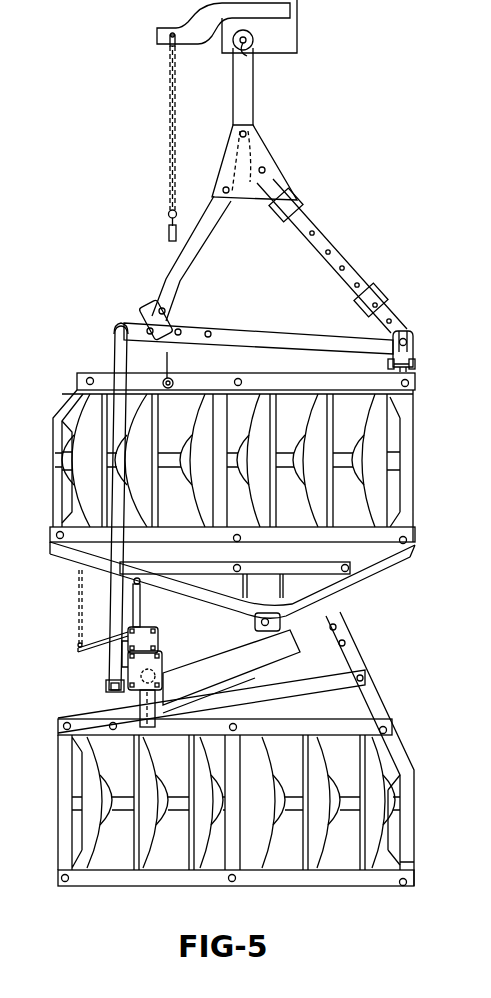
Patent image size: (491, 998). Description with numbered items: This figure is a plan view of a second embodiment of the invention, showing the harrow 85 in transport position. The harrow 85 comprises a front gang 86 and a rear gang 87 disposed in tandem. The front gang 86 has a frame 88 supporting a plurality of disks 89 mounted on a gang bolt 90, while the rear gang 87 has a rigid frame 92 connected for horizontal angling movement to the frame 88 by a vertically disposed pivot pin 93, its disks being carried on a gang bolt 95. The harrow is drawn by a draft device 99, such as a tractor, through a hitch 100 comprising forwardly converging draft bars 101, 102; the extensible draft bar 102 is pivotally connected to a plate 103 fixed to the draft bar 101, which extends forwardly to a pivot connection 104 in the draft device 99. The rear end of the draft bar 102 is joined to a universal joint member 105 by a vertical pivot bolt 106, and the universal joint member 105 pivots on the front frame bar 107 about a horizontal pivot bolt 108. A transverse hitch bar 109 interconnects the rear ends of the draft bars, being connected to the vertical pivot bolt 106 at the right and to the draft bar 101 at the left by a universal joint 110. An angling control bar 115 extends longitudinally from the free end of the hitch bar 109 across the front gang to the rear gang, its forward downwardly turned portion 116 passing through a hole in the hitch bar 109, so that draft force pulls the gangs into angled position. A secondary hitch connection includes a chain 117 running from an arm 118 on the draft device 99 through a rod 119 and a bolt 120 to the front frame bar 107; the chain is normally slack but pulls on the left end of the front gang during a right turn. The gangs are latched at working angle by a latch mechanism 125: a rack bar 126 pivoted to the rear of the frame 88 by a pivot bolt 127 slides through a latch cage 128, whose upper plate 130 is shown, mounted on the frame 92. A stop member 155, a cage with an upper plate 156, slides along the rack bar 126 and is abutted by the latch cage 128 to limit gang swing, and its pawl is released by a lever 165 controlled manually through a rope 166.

The harrow 85 is at (259, 510).
The front gang 86 is at (418, 415).
The rear gang 87 is at (256, 749).
The frame 88 is at (393, 548).
The disks 89 is at (301, 410).
The gang bolt 90 is at (338, 464).
The rigid frame 92 is at (399, 760).
The pivot pin 93 is at (269, 622).
The gang bolt 95 is at (292, 808).
The draft device 99 is at (291, 34).
The hitch 100 is at (279, 181).
The draft bar 101 is at (206, 238).
The draft bar 102 is at (324, 243).
The plate 103 is at (254, 146).
The pivot connection 104 is at (247, 55).
The universal joint member 105 is at (413, 345).
The vertical pivot bolt 106 is at (408, 331).
The front frame bar 107 is at (290, 380).
The horizontal pivot bolt 108 is at (415, 365).
The hitch bar 109 is at (264, 332).
The universal joint 110 is at (146, 306).
The angling control bar 115 is at (118, 350).
The downwardly turned portion 116 is at (121, 322).
The chain 117 is at (168, 80).
The arm 118 is at (160, 40).
The rod 119 is at (168, 240).
The bolt 120 is at (174, 378).
The latch mechanism 125 is at (176, 642).
The rack bar 126 is at (142, 617).
The pivot bolt 127 is at (133, 581).
The latch cage 128 is at (163, 662).
The upper plate 130 is at (156, 677).
The stop member 155 is at (163, 628).
The upper plate 156 is at (158, 640).
The lever 165 is at (92, 648).
The rope 166 is at (77, 620).